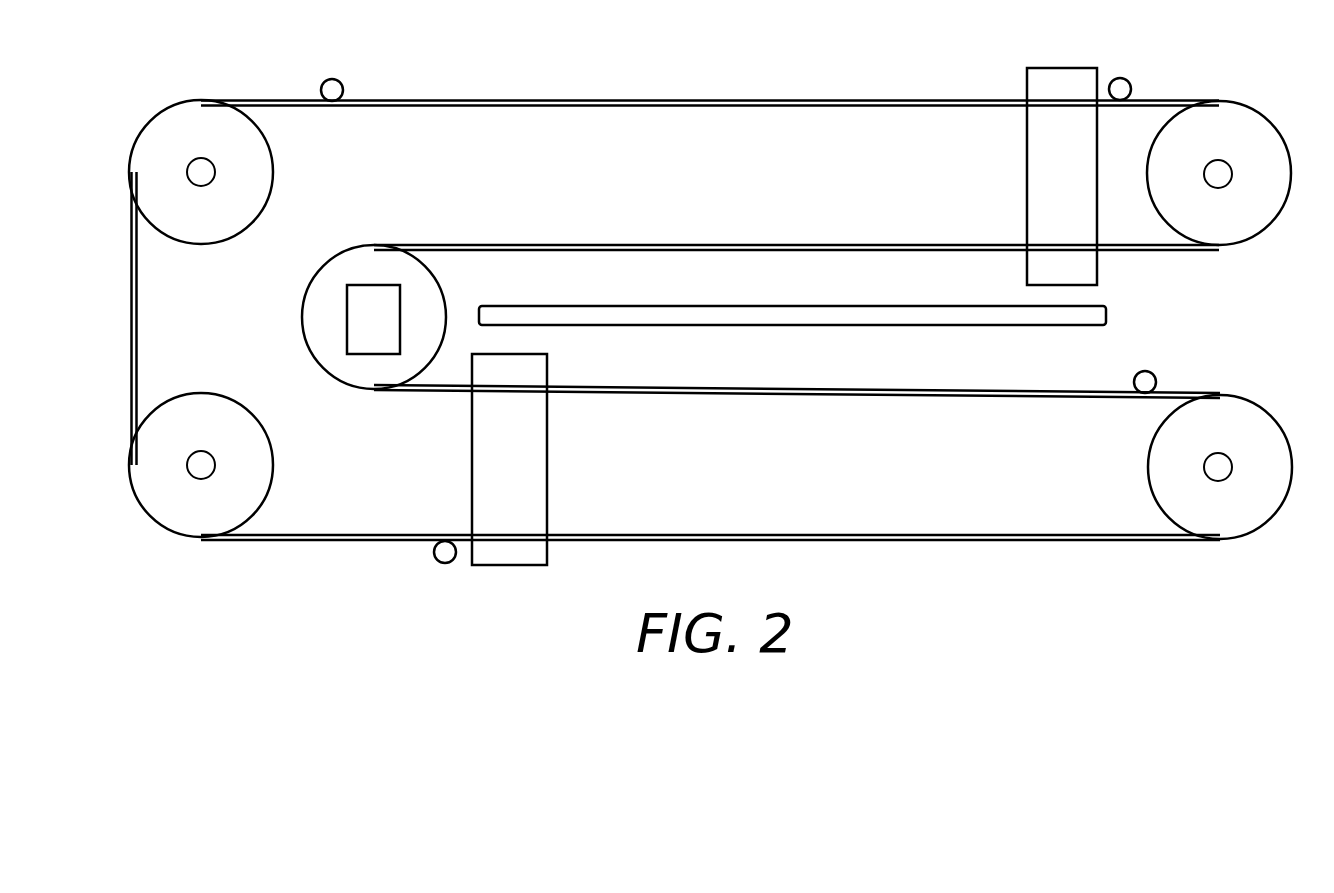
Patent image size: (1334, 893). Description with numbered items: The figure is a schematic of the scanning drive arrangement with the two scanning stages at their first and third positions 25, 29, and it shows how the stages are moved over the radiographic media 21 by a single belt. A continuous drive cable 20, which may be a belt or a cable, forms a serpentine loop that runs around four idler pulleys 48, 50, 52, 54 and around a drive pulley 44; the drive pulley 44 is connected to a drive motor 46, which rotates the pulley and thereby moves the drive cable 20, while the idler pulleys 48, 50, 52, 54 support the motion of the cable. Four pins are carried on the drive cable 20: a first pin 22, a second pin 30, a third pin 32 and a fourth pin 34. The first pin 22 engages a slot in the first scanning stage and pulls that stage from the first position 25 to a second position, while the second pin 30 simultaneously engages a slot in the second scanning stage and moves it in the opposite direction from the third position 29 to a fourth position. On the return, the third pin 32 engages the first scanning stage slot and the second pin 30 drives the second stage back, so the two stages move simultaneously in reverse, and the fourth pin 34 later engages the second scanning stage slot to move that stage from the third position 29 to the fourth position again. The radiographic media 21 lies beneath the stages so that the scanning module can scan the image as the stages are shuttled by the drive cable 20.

The continuous drive cable 20 is at (582, 100).
The radiographic media 21 is at (955, 327).
The first pin 22 is at (1124, 78).
The first position 25 is at (1062, 67).
The third position 29 is at (524, 567).
The second pin 30 is at (341, 81).
The third pin 32 is at (437, 564).
The fourth pin 34 is at (1153, 374).
The drive pulley 44 is at (318, 283).
The drive motor 46 is at (347, 325).
The idler pulley 48 is at (1272, 135).
The idler pulley 50 is at (157, 130).
The idler pulley 52 is at (156, 503).
The idler pulley 54 is at (1272, 495).